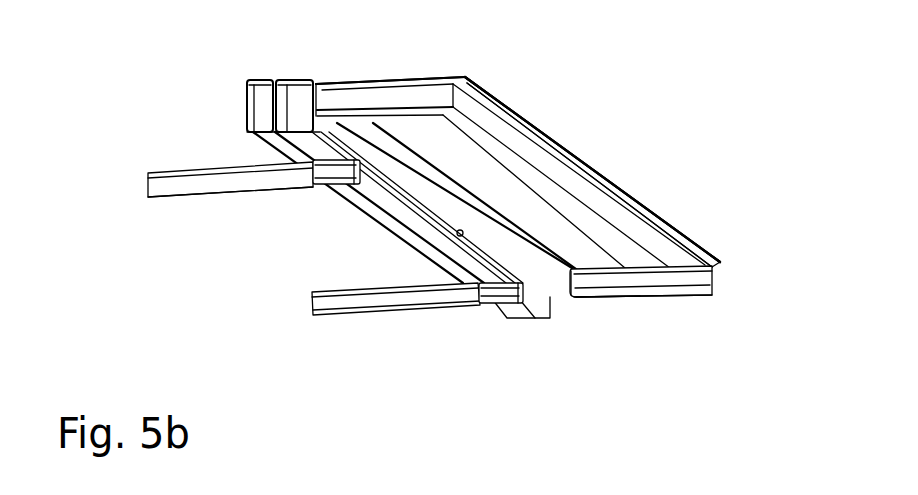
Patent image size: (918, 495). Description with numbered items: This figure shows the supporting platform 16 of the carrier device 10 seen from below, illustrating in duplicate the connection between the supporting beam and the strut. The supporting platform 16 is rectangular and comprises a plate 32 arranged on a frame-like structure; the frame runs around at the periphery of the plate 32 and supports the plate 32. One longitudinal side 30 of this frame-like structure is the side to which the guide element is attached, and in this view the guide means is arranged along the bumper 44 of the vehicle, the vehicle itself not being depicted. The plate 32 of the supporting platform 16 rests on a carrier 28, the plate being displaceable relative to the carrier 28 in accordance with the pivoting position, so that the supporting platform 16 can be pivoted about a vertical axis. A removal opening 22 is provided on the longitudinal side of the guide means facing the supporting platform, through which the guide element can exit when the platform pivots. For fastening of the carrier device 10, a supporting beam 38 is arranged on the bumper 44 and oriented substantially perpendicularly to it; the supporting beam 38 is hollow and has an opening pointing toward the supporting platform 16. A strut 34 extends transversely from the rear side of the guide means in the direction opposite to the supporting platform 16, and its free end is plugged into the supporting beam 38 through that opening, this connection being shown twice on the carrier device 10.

The carrier device 10 is at (669, 110).
The supporting platform 16 is at (500, 130).
The removal opening 22 is at (464, 233).
The carrier 28 is at (652, 302).
The longitudinal side 30 is at (570, 305).
The plate 32 is at (673, 240).
The strut 34 is at (503, 313).
The supporting beam 38 is at (323, 190).
The bumper 44 is at (257, 98).